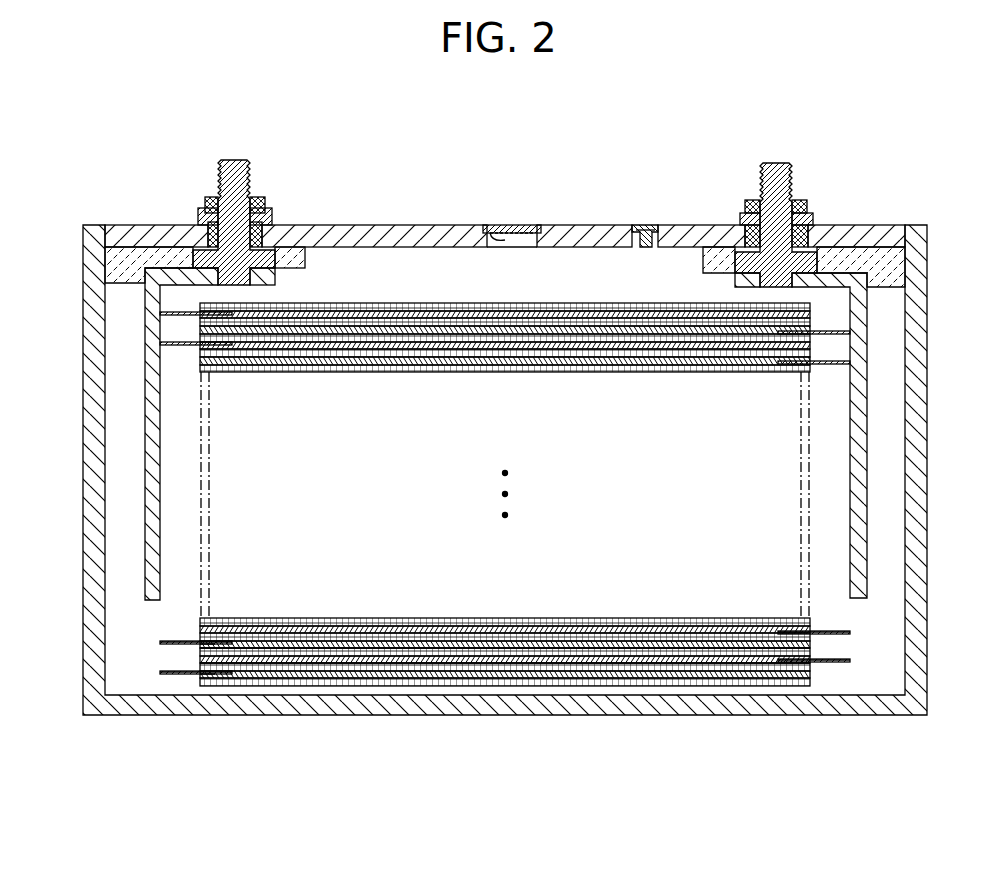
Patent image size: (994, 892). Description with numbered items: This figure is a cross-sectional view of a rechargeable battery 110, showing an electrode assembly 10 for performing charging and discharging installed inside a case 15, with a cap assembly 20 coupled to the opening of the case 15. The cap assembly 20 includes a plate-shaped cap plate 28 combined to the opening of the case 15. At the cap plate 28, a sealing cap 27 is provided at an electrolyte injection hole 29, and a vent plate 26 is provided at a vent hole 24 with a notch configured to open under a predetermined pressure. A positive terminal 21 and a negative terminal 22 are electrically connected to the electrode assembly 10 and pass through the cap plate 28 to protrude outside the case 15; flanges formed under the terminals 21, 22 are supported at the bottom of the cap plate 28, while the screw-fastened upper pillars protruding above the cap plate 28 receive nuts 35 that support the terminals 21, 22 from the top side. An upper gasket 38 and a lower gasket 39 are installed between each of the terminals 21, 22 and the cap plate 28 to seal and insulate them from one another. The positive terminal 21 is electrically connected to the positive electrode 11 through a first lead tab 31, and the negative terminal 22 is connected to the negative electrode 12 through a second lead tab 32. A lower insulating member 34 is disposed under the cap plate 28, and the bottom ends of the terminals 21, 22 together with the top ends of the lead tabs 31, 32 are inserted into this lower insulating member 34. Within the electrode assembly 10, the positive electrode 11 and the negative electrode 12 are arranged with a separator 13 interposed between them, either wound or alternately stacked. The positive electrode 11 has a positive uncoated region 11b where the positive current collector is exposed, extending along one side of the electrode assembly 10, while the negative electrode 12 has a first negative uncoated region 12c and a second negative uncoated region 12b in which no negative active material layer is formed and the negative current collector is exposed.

The rechargeable battery 110 is at (704, 115).
The electrode assembly 10 is at (602, 690).
The positive electrode 11 is at (302, 680).
The positive uncoated region 11b is at (178, 680).
The negative electrode 12 is at (705, 665).
The second negative uncoated region 12b is at (830, 662).
The first negative uncoated region 12c is at (200, 670).
The separator 13 is at (505, 651).
The case 15 is at (913, 418).
The cap assembly 20 is at (586, 222).
The positive terminal 21 is at (233, 165).
The negative terminal 22 is at (776, 170).
The vent hole 24 is at (505, 225).
The vent plate 26 is at (540, 229).
The sealing cap 27 is at (642, 226).
The cap plate 28 is at (882, 236).
The electrolyte injection hole 29 is at (655, 230).
The first lead tab 31 is at (150, 432).
The second lead tab 32 is at (862, 532).
The lower insulating member 34 is at (112, 268).
The nut 35 is at (215, 200).
The upper gasket 38 is at (200, 212).
The lower gasket 39 is at (210, 238).